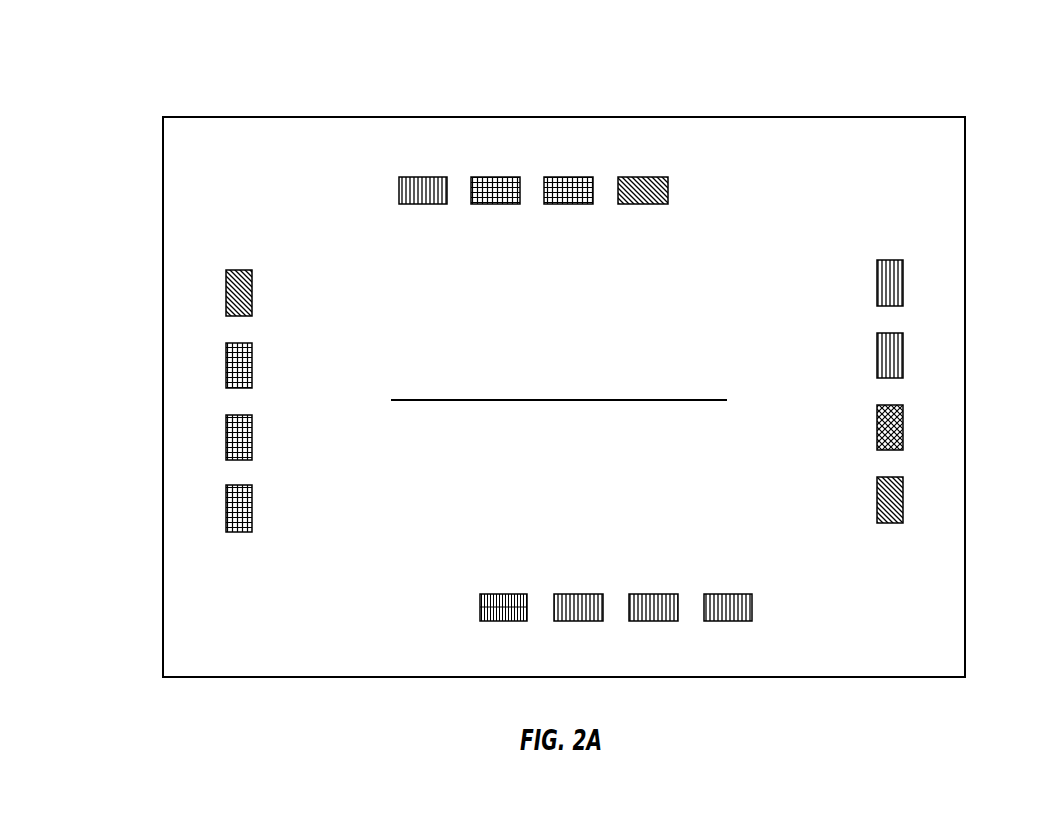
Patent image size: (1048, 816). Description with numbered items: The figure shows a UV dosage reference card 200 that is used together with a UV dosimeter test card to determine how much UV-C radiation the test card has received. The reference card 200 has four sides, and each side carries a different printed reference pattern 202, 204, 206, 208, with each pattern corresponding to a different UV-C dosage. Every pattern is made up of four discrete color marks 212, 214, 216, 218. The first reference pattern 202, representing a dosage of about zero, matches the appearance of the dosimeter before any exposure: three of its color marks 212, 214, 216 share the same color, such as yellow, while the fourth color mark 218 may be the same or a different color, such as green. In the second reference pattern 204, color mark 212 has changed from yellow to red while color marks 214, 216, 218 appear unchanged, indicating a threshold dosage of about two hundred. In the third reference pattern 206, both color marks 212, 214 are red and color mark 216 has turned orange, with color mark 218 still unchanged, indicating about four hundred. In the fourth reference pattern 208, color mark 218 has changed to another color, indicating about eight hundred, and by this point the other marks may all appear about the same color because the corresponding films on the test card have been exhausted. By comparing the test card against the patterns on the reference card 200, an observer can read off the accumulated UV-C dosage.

The UV dosage reference card 200 is at (967, 165).
The first reference pattern 202 is at (180, 378).
The second reference pattern 204 is at (526, 146).
The third reference pattern 206 is at (946, 380).
The fourth reference pattern 208 is at (614, 638).
The first color mark 212 is at (422, 176).
The second color mark 214 is at (508, 176).
The third color mark 216 is at (562, 176).
The fourth color mark 218 is at (642, 176).